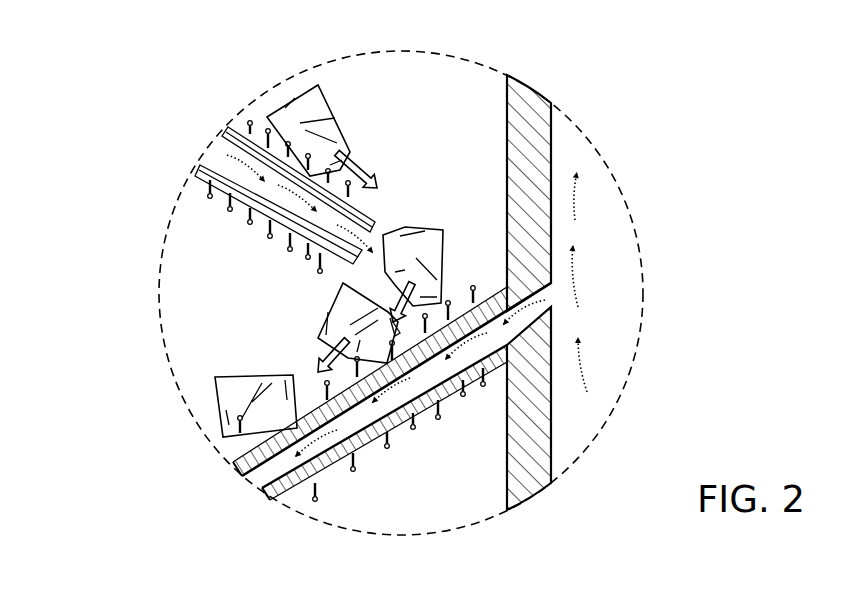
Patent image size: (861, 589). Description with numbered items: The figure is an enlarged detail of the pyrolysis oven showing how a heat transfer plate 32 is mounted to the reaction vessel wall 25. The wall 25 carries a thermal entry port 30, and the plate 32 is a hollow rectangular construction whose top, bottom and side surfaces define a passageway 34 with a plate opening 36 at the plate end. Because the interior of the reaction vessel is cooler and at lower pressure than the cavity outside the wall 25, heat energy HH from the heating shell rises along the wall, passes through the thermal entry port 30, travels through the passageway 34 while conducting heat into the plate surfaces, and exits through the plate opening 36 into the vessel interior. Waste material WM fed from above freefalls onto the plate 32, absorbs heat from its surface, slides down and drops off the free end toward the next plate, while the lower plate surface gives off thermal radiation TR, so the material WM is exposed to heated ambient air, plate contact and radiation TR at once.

The reaction vessel wall 25 is at (557, 450).
The thermal entry port 30 is at (550, 292).
The heat transfer plate 32 is at (285, 492).
The passageway 34 is at (438, 371).
The plate opening 36 is at (383, 232).
The thermal radiation TR is at (229, 226).
The waste material WM is at (213, 403).
The heat energy HH is at (583, 200).